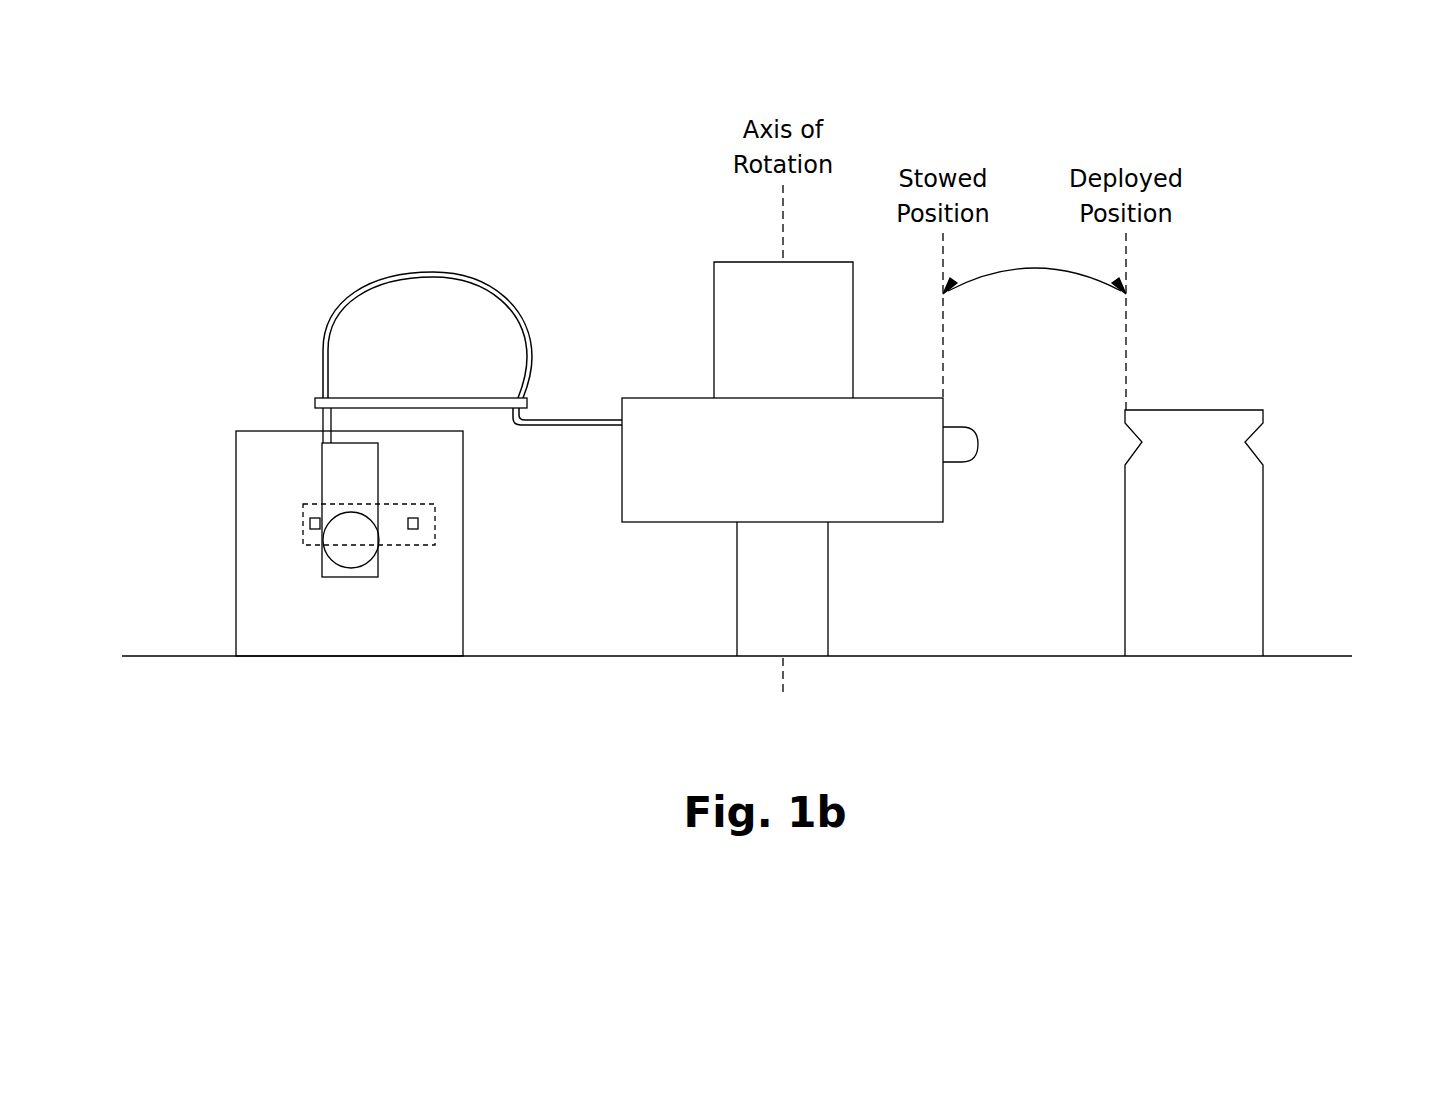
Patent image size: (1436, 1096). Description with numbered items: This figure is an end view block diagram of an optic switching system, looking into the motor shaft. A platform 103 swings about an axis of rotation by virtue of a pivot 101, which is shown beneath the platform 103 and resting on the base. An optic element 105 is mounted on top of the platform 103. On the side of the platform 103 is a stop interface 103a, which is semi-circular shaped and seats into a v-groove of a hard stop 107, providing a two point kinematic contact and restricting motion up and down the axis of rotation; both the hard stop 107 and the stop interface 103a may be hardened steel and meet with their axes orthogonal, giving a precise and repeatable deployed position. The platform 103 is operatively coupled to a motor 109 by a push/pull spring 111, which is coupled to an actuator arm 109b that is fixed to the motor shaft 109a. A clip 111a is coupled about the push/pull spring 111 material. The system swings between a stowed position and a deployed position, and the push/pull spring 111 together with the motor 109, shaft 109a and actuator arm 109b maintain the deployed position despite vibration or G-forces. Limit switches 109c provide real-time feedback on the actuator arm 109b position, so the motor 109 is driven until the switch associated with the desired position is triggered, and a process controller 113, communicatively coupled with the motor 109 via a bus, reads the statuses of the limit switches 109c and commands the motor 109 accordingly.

The pivot 101 is at (782, 589).
The platform 103 is at (782, 460).
The stop interface 103a is at (972, 467).
The optic element 105 is at (783, 330).
The hard stop 107 is at (1194, 533).
The motor 109 is at (349, 544).
The motor shaft 109a is at (323, 563).
The actuator arm 109b is at (322, 487).
The limit switches 109c is at (418, 545).
The push/pull spring 111 is at (470, 275).
The clip 111a is at (320, 397).
The process controller 113 is at (1323, 650).